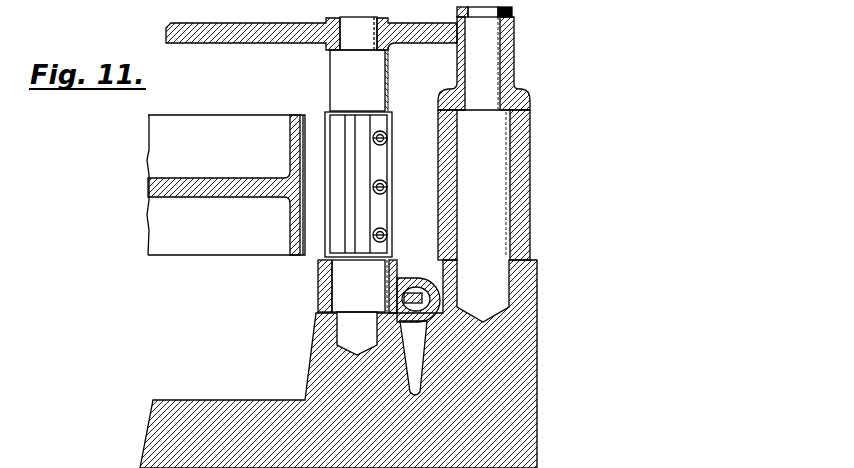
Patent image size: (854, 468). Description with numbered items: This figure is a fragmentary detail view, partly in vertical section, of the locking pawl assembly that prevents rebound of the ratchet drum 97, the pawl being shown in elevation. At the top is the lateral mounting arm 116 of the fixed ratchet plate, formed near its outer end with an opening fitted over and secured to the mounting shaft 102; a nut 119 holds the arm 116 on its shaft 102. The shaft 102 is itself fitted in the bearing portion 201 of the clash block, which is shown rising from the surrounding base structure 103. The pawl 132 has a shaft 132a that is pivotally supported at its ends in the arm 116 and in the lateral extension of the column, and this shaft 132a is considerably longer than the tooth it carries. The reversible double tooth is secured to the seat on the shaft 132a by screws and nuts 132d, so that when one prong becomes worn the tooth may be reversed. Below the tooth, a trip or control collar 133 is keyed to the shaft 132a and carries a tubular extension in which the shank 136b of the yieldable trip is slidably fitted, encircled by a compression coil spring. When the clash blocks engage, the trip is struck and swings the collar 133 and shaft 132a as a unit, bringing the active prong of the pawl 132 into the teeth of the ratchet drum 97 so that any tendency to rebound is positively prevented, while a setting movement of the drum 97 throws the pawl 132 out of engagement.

The ratchet drum 97 is at (295, 255).
The mounting shaft 102 is at (530, 124).
The base 103 is at (536, 368).
The lateral mounting arm 116 is at (266, 40).
The nut 119 is at (512, 12).
The pawl 132 is at (378, 167).
The shaft 132a is at (373, 90).
The screws and nuts 132d is at (388, 187).
The trip collar 133 is at (318, 300).
The shank 136b is at (414, 291).
The bearing portion 201 is at (524, 205).